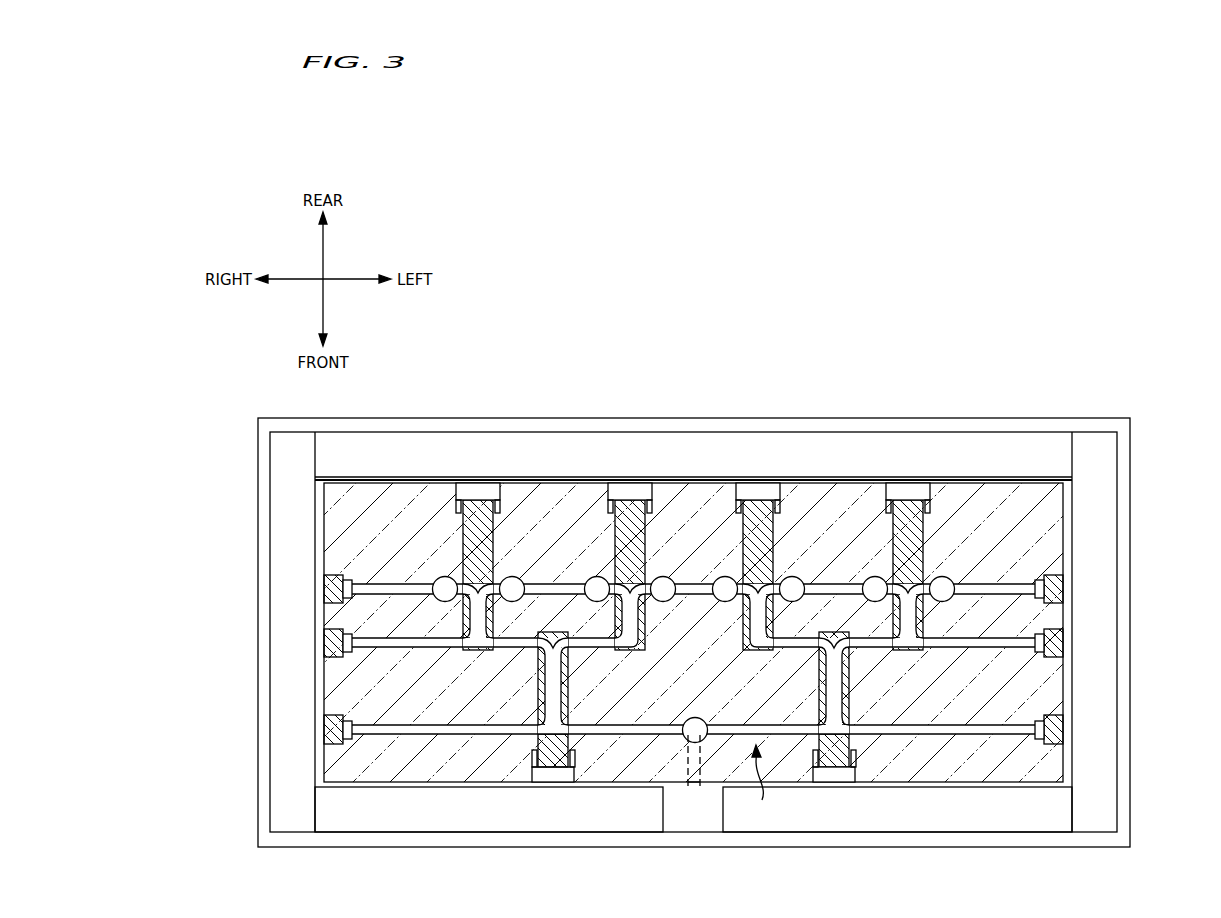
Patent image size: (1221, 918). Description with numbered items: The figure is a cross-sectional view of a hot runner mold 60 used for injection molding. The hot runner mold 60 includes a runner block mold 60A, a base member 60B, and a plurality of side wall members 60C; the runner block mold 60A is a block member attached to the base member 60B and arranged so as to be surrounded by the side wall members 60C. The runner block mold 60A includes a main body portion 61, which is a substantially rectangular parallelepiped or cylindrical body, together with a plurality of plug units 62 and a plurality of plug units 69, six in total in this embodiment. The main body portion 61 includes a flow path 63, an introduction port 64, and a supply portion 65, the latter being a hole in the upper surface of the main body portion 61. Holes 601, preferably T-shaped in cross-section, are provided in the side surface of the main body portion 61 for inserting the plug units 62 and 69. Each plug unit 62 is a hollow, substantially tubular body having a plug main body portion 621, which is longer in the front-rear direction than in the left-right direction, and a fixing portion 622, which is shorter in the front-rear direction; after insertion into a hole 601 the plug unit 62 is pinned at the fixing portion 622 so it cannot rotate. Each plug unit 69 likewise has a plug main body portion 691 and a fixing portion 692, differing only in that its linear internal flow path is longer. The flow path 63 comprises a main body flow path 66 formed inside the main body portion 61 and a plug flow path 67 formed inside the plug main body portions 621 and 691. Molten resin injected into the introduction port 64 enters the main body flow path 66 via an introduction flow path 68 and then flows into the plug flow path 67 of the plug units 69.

The hot runner mold 60 is at (1020, 412).
The runner block mold 60A is at (1070, 534).
The base member 60B is at (1130, 745).
The side wall members 60C is at (818, 432).
The main body portion 61 is at (1002, 487).
The hole 601 is at (470, 483).
The plug unit 62 is at (480, 538).
The plug main body portion 621 is at (928, 514).
The fixing portion 622 is at (916, 496).
The flow path 63 is at (758, 783).
The introduction port 64 is at (694, 788).
The supply portion 65 is at (445, 577).
The main body flow path 66 is at (549, 583).
The plug flow path 67 is at (471, 614).
The introduction flow path 68 is at (688, 765).
The plug unit 69 is at (563, 697).
The plug main body portion 691 is at (850, 712).
The fixing portion 692 is at (840, 783).